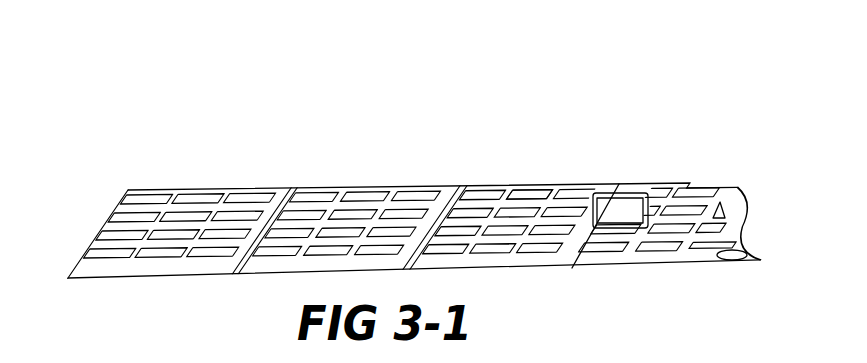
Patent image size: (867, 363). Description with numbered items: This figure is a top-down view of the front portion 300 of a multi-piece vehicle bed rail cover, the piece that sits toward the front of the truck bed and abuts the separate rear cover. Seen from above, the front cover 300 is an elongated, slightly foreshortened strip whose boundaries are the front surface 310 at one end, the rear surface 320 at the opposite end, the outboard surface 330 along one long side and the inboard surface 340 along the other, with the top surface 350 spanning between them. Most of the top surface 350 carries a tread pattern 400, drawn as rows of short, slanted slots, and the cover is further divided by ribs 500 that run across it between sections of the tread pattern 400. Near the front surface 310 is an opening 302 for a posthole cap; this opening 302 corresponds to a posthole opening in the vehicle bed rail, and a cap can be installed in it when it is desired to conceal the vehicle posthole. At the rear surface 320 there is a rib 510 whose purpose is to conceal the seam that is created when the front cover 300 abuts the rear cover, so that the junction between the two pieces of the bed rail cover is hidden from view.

The front portion of the bed rail cover 300 is at (496, 78).
The opening for a posthole cap 302 is at (628, 223).
The front surface 310 is at (748, 217).
The rear surface 320 is at (100, 223).
The outboard surface 330 is at (514, 258).
The inboard surface 340 is at (555, 193).
The top surface 350 is at (377, 233).
The tread pattern 400 is at (208, 207).
The ribs 500 is at (297, 188).
The rib at the rear surface 510 is at (135, 190).